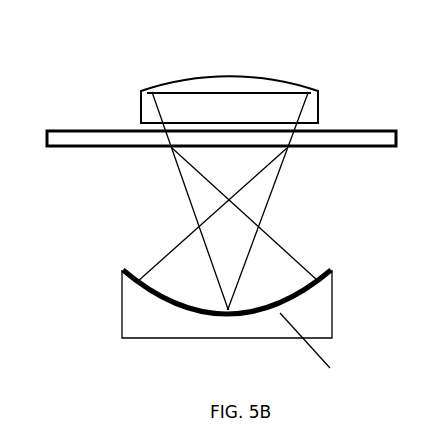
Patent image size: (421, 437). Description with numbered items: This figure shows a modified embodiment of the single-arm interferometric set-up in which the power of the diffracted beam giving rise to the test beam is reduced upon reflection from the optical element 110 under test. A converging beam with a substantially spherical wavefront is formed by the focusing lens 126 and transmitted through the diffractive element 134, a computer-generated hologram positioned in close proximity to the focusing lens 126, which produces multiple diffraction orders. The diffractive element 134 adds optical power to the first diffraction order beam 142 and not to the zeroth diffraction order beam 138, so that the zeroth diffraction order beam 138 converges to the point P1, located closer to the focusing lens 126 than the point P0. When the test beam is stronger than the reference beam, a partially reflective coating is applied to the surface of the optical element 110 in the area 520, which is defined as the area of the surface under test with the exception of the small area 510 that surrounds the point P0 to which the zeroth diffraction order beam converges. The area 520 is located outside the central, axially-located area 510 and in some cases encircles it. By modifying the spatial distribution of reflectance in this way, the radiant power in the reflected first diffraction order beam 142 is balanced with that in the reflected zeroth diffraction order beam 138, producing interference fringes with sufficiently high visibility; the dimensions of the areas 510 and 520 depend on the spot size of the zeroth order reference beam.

The optical element 110 is at (122, 299).
The focusing lens 126 is at (316, 79).
The diffractive element 134 is at (113, 130).
The zeroth diffraction order beam 138 is at (176, 182).
The first diffraction order beam 142 is at (172, 253).
The area around point P0 510 is at (220, 316).
The area of the SUT outside area 510 520 is at (325, 351).
The convergence point of zeroth order beam P1 is at (236, 199).
The convergence point on the test surface P0 is at (236, 303).